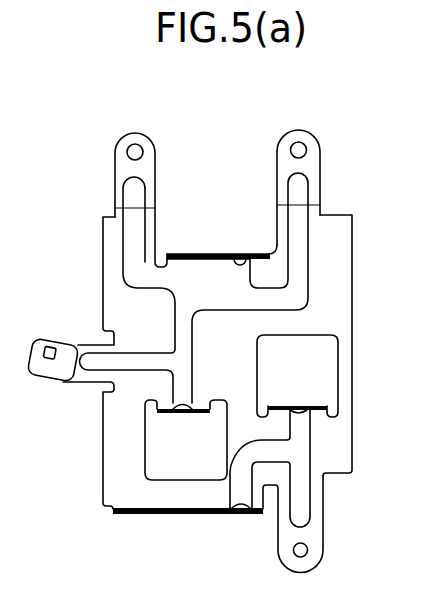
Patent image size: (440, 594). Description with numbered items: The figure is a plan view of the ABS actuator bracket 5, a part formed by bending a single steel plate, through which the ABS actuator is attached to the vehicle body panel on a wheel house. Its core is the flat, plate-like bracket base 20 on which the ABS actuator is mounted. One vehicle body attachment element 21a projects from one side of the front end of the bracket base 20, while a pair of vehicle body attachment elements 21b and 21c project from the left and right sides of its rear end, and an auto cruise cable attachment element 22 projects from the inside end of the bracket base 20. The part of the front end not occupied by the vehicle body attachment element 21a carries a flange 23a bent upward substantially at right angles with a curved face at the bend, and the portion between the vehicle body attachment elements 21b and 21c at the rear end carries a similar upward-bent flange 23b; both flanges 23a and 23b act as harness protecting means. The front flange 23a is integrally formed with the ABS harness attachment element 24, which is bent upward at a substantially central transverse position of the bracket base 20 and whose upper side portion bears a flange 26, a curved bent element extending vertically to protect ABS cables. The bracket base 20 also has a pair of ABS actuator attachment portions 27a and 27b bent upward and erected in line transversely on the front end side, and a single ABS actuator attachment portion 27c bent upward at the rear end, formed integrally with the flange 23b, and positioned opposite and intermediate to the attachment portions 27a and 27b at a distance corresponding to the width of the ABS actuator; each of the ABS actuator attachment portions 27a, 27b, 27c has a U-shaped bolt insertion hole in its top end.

The ABS actuator bracket 5 is at (385, 235).
The bracket base 20 is at (343, 291).
The vehicle body attachment element 21a is at (313, 540).
The vehicle body attachment element 21b is at (310, 160).
The vehicle body attachment element 21c is at (117, 156).
The auto cruise cable attachment element 22 is at (57, 371).
The flange 23a is at (160, 516).
The flange 23b is at (188, 254).
The ABS harness attachment element 24 is at (237, 516).
The flange 26 is at (214, 508).
The ABS actuator attachment portion 27a is at (305, 412).
The ABS actuator attachment portion 27b is at (178, 413).
The ABS actuator attachment portion 27c is at (239, 253).